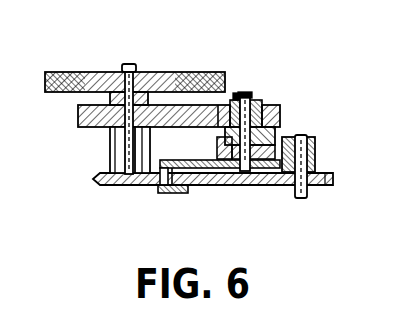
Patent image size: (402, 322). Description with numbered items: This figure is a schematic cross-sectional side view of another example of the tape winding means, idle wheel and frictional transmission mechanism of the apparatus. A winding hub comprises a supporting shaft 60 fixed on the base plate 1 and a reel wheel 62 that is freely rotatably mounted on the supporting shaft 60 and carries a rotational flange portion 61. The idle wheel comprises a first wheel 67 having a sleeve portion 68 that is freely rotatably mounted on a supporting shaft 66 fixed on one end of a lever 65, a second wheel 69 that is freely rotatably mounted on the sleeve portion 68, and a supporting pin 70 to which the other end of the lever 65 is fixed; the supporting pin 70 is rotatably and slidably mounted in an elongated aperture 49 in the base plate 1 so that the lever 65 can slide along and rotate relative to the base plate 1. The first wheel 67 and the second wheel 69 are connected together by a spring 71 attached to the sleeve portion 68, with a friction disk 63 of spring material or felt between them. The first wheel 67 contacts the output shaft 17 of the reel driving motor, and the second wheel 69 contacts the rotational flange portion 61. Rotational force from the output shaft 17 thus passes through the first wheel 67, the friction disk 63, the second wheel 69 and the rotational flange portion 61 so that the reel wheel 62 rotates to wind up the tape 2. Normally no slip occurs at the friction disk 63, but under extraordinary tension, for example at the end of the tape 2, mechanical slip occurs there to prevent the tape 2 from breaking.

The base plate 1 is at (326, 184).
The tape 2 is at (197, 72).
The output shaft 17 is at (318, 153).
The elongated aperture 49 is at (158, 182).
The supporting shaft 60 is at (127, 66).
The rotational flange portion 61 is at (172, 108).
The reel wheel 62 is at (150, 72).
The friction disk 63 is at (282, 135).
The lever 65 is at (222, 168).
The supporting shaft 66 is at (248, 92).
The first wheel 67 is at (216, 146).
The sleeve portion 68 is at (262, 100).
The second wheel 69 is at (278, 106).
The supporting pin 70 is at (180, 193).
The spring 71 is at (236, 93).